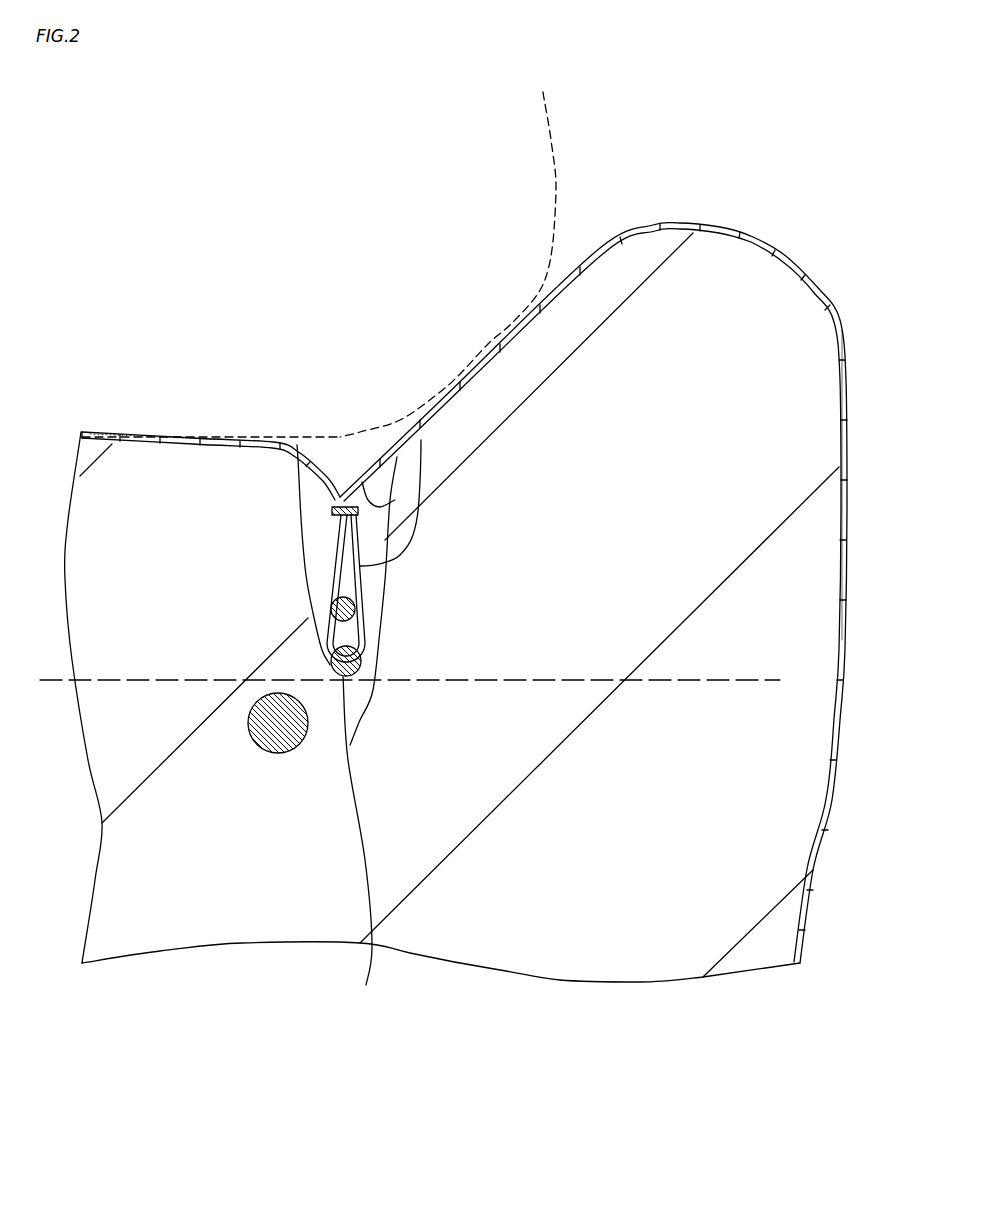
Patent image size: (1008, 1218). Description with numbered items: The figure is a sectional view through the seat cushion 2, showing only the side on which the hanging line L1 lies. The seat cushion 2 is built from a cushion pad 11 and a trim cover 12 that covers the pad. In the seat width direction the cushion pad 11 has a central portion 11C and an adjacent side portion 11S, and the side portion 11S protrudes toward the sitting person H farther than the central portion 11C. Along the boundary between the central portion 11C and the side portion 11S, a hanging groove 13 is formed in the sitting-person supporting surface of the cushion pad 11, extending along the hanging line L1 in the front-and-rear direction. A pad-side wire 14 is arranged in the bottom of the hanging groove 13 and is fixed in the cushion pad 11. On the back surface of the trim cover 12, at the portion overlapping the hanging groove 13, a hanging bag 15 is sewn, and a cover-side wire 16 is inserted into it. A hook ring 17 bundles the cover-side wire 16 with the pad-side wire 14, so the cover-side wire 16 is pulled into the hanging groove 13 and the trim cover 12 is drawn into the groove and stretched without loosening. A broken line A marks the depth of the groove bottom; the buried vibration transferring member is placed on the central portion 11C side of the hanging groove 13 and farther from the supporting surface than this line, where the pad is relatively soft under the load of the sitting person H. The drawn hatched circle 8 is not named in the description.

The seat cushion 2 is at (787, 254).
The wire (cord) 8 is at (268, 753).
The cushion pad 11 is at (618, 986).
The central portion 11C is at (130, 480).
The side portion 11S is at (690, 290).
The trim cover 12 is at (843, 322).
The hanging groove 13 is at (362, 480).
The pad-side wire 14 is at (360, 842).
The hanging bag 15 is at (421, 442).
The cover-side wire 16 is at (320, 667).
The hook ring 17 is at (330, 632).
The sitting person H is at (558, 187).
The hanging line L1 is at (338, 445).
The broken line A is at (397, 680).